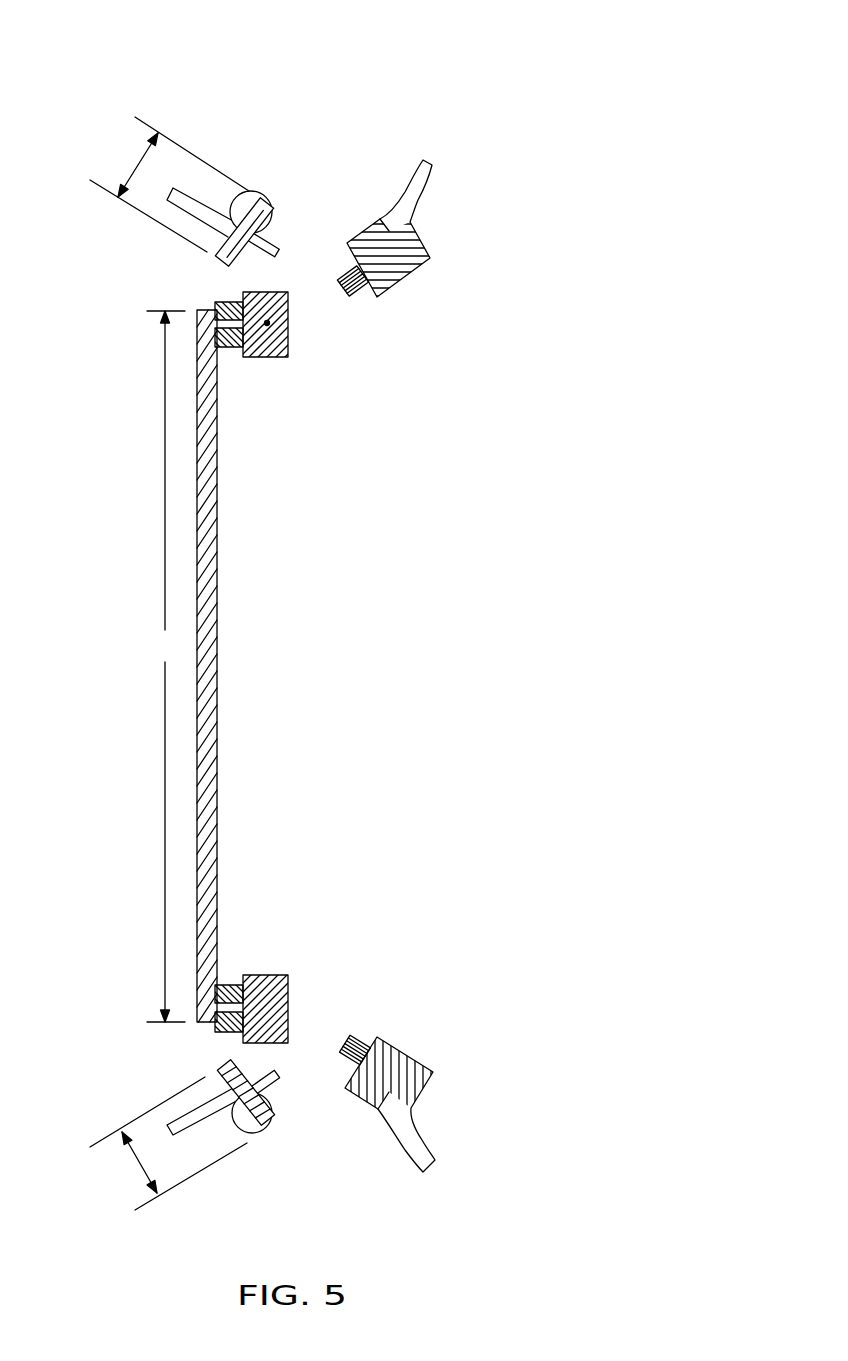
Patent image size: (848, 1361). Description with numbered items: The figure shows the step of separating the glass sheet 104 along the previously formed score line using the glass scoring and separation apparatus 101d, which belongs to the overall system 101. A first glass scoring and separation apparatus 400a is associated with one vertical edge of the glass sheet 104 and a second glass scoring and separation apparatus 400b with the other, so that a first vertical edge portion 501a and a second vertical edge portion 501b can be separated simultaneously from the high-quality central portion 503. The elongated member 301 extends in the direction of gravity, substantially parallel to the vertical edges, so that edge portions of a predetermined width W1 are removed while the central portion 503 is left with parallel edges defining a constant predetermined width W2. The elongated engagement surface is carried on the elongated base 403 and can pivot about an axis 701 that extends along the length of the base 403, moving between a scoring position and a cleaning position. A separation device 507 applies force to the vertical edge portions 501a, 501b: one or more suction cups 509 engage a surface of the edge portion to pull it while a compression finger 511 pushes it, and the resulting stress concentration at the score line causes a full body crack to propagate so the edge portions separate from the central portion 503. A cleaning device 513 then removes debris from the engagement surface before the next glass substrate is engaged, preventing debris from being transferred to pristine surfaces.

The handle 101 is at (200, 139).
The glass scoring and separation apparatus 101d is at (240, 151).
The first vertical edge portion 501a is at (268, 196).
The second vertical edge portion 501b is at (274, 1131).
The first glass scoring and separation apparatus 400a is at (317, 240).
The second glass scoring and separation apparatus 400b is at (312, 1069).
The cleaning device 513 is at (407, 666).
The elongated base 403 is at (288, 313).
The axis 701 is at (267, 323).
The elongated member 301 is at (233, 377).
The high-quality central portion 503 is at (217, 530).
The glass sheet 104 is at (242, 666).
The separation device 507 is at (308, 1045).
The suction cup 509 is at (277, 1074).
The compression finger 511 is at (185, 1112).
The predetermined width W1 is at (135, 162).
The constant predetermined width W2 is at (166, 666).